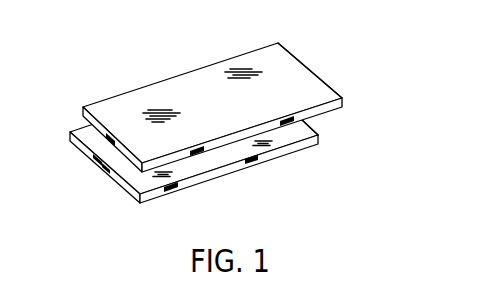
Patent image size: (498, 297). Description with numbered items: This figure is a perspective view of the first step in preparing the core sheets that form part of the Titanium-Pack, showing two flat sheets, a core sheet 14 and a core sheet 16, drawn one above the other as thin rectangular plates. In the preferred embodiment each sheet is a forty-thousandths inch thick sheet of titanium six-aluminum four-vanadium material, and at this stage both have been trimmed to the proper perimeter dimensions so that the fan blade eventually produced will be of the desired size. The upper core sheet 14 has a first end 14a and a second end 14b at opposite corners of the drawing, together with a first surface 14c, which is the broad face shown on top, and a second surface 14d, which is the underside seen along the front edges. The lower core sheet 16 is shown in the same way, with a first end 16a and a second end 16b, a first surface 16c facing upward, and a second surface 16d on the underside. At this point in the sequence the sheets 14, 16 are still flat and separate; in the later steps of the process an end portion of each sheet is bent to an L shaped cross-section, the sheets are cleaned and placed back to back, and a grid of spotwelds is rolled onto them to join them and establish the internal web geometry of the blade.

The core sheet 14 is at (224, 95).
The first end of core sheet 14a is at (82, 107).
The second end of core sheet 14b is at (328, 83).
The first surface of core sheet 14c is at (212, 65).
The second surface of core sheet 14d is at (330, 107).
The core sheet 16 is at (232, 155).
The first end of core sheet 16a is at (128, 194).
The second end of core sheet 16b is at (318, 131).
The first surface of core sheet 16c is at (203, 160).
The second surface of core sheet 16d is at (242, 171).